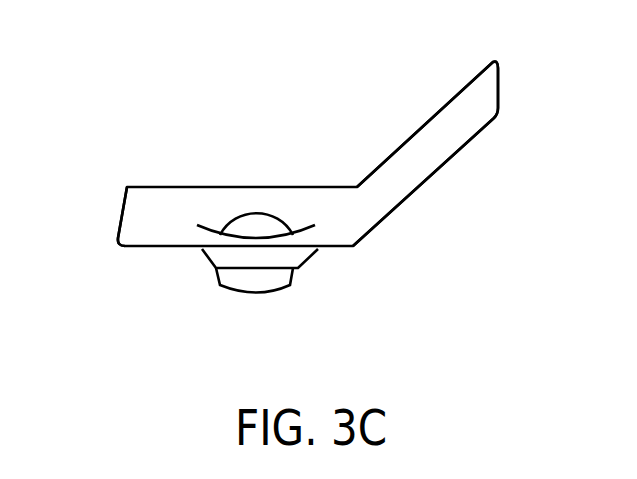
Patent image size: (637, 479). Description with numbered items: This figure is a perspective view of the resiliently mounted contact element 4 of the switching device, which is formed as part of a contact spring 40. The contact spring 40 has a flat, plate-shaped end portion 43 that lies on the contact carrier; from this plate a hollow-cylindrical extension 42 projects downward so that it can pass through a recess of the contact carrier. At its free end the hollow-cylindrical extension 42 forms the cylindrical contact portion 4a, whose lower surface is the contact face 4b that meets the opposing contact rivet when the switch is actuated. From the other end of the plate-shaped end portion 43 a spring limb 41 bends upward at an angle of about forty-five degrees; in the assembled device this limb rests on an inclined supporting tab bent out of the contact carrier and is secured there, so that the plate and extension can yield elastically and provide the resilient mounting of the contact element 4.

The contact element 4 is at (260, 312).
The cylindrical contact portion 4a is at (296, 272).
The contact face 4b is at (250, 293).
The contact spring 40 is at (355, 168).
The spring limb 41 is at (459, 106).
The hollow-cylindrical extension 42 is at (212, 259).
The plate-shaped end portion 43 is at (128, 185).